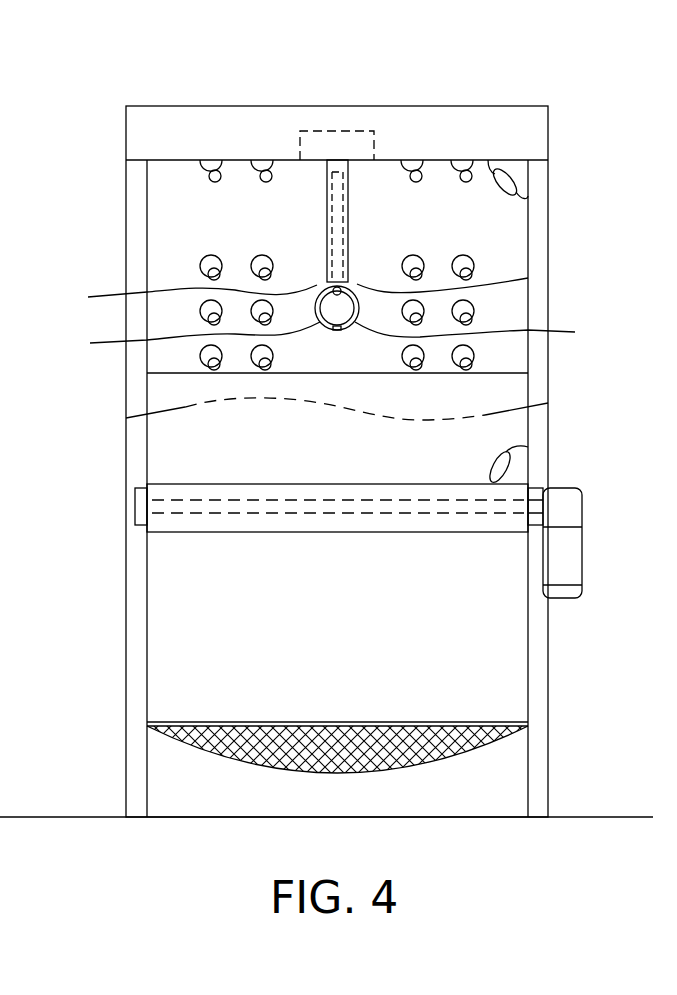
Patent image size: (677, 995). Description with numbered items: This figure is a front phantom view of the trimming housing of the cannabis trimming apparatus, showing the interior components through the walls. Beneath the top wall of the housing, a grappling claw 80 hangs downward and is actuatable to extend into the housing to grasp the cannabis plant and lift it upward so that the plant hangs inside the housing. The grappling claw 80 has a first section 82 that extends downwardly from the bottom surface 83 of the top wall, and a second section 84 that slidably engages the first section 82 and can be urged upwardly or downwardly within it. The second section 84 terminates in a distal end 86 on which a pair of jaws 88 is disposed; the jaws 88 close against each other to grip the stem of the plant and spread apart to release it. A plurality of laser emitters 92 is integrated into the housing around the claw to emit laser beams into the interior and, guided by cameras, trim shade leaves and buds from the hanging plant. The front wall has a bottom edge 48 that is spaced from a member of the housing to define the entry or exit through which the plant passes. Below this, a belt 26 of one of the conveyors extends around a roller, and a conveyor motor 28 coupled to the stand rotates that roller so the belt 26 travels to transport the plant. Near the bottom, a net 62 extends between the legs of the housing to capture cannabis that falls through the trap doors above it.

The belt 26 is at (180, 484).
The conveyor motor 28 is at (582, 556).
The bottom edge 48 is at (490, 373).
The net 62 is at (448, 752).
The grappling claw 80 is at (451, 169).
The first section 82 is at (327, 228).
The bottom surface 83 is at (435, 160).
The second section 84 is at (528, 278).
The distal end 86 is at (285, 299).
The jaws 88 is at (332, 341).
The laser emitters 92 is at (255, 257).